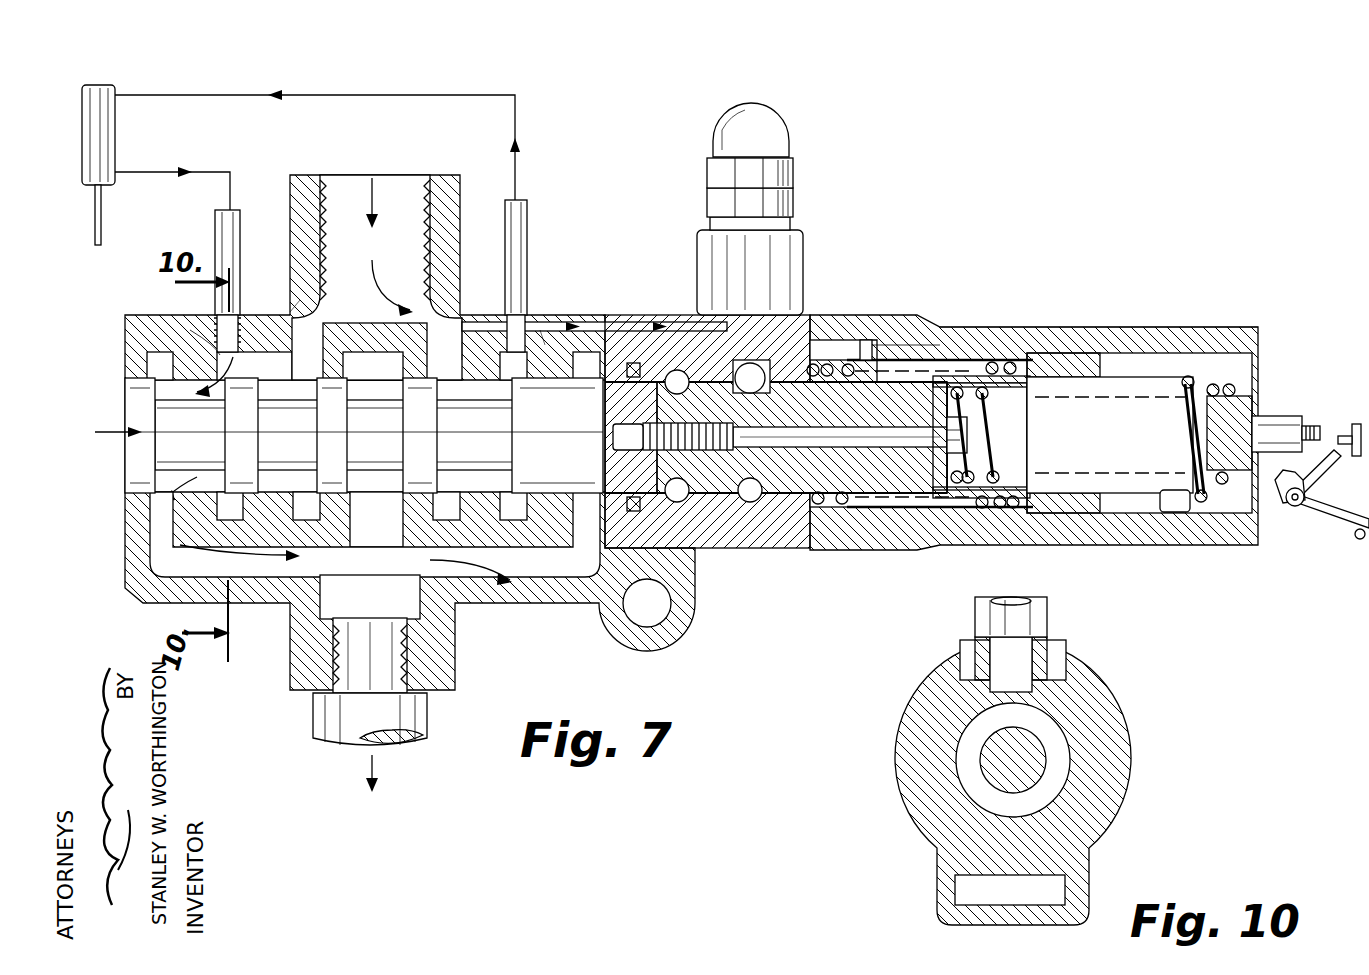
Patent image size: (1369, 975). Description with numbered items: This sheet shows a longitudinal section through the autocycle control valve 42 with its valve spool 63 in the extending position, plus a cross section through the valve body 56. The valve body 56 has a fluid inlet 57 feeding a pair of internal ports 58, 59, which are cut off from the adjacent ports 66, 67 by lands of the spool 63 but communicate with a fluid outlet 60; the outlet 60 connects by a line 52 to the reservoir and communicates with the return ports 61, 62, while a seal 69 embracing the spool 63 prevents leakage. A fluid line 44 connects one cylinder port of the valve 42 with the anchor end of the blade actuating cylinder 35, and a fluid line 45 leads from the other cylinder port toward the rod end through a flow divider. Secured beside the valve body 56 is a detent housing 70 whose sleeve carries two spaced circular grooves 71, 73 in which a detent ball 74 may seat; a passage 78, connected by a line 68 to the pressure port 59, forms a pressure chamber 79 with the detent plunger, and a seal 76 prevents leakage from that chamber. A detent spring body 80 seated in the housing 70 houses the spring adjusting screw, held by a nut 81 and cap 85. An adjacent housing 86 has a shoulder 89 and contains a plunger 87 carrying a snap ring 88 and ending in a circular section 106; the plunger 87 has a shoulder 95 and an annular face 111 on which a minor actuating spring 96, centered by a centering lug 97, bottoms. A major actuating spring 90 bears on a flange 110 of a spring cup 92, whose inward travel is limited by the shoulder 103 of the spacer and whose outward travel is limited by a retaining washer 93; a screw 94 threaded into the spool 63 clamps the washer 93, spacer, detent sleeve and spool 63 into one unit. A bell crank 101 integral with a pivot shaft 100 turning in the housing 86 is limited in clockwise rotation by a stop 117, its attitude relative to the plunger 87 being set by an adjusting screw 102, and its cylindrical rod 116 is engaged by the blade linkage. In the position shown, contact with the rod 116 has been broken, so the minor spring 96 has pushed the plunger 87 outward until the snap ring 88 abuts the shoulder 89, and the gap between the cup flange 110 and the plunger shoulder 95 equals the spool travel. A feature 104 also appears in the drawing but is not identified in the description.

In FIG. 7, the blade actuating cylinder 35 is at (90, 153).
In FIG. 7, the fluid line 44 is at (205, 98).
In FIG. 7, the fluid line 45 is at (150, 172).
In FIG. 10, the fluid line 45 is at (1045, 628).
In FIG. 7, the fluid inlet 57 is at (415, 180).
In FIG. 7, the internal port 58 is at (288, 312).
In FIG. 7, the internal port 59 is at (466, 312).
In FIG. 7, the port 66 is at (190, 327).
In FIG. 10, the port 66 is at (985, 690).
In FIG. 7, the port 67 is at (545, 330).
In FIG. 7, the line 68 is at (598, 322).
In FIG. 7, the seal 69 is at (590, 325).
In FIG. 7, the detent ball 74 is at (735, 372).
In FIG. 7, the passage 78 is at (735, 350).
In FIG. 7, the pressure chamber 79 is at (730, 315).
In FIG. 7, the nut 81 is at (715, 205).
In FIG. 7, the cap 85 is at (728, 128).
In FIG. 7, the detent spring body 80 is at (795, 220).
In FIG. 7, the detent housing 70 is at (803, 245).
In FIG. 7, the seal 76 is at (805, 312).
In FIG. 7, the passage 104 is at (868, 345).
In FIG. 7, the retaining washer 93 is at (915, 350).
In FIG. 7, the shoulder 89 is at (870, 340).
In FIG. 7, the control valve 42 is at (990, 325).
In FIG. 7, the major actuating spring 90 is at (990, 362).
In FIG. 7, the shoulder 95 is at (1085, 345).
In FIG. 7, the minor actuating spring 96 is at (1190, 400).
In FIG. 7, the circular section 106 is at (1272, 425).
In FIG. 7, the adjusting screw 102 is at (1310, 430).
In FIG. 7, the stop 117 is at (1352, 430).
In FIG. 7, the valve spool 63 is at (135, 510).
In FIG. 10, the valve spool 63 is at (985, 762).
In FIG. 7, the valve body 56 is at (135, 580).
In FIG. 10, the valve body 56 is at (915, 822).
In FIG. 7, the return port 61 is at (240, 610).
In FIG. 10, the return port 61 is at (960, 890).
In FIG. 7, the fluid outlet 60 is at (335, 695).
In FIG. 7, the line 52 is at (410, 748).
In FIG. 7, the return port 62 is at (520, 585).
In FIG. 7, the circular groove 71 is at (678, 500).
In FIG. 7, the circular groove 73 is at (752, 500).
In FIG. 7, the snap ring 88 is at (853, 550).
In FIG. 7, the housing 86 is at (882, 548).
In FIG. 7, the shoulder 103 is at (905, 548).
In FIG. 7, the screw 94 is at (940, 548).
In FIG. 7, the spring cup 92 is at (972, 520).
In FIG. 7, the flange 110 is at (1050, 548).
In FIG. 7, the plunger 87 is at (1175, 548).
In FIG. 7, the centering lug 97 is at (1210, 548).
In FIG. 7, the annular face 111 is at (1247, 548).
In FIG. 7, the pivot shaft 100 is at (1290, 510).
In FIG. 7, the bell crank 101 is at (1330, 520).
In FIG. 7, the rod 116 is at (1362, 540).